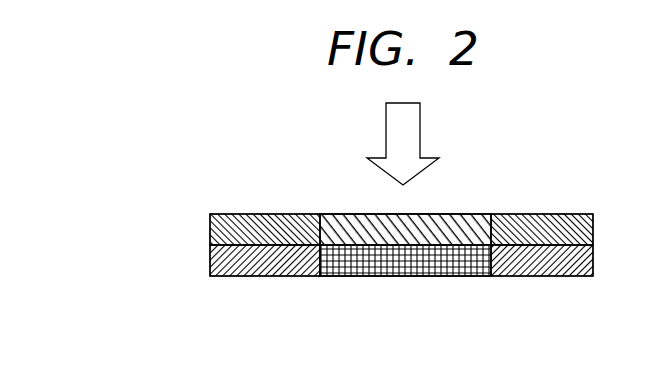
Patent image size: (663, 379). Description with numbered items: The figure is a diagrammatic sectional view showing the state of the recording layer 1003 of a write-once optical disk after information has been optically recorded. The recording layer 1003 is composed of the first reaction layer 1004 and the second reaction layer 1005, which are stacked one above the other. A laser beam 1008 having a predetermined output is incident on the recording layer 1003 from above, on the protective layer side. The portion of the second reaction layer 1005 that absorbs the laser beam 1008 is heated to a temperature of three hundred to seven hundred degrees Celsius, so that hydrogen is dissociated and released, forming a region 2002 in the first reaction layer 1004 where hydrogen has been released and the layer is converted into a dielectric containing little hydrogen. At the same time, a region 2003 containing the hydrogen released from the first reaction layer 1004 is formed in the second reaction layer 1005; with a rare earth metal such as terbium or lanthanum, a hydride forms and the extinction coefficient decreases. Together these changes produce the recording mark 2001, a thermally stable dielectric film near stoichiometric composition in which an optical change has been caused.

The recording layer 1003 is at (88, 211).
The first reaction layer 1004 is at (218, 261).
The second reaction layer 1005 is at (218, 231).
The laser beam 1008 is at (412, 124).
The recording mark 2001 is at (492, 277).
The region of the first reaction layer wherein hydrogen is dissociated/released 2002 is at (480, 260).
The region containing released hydrogen 2003 is at (436, 226).